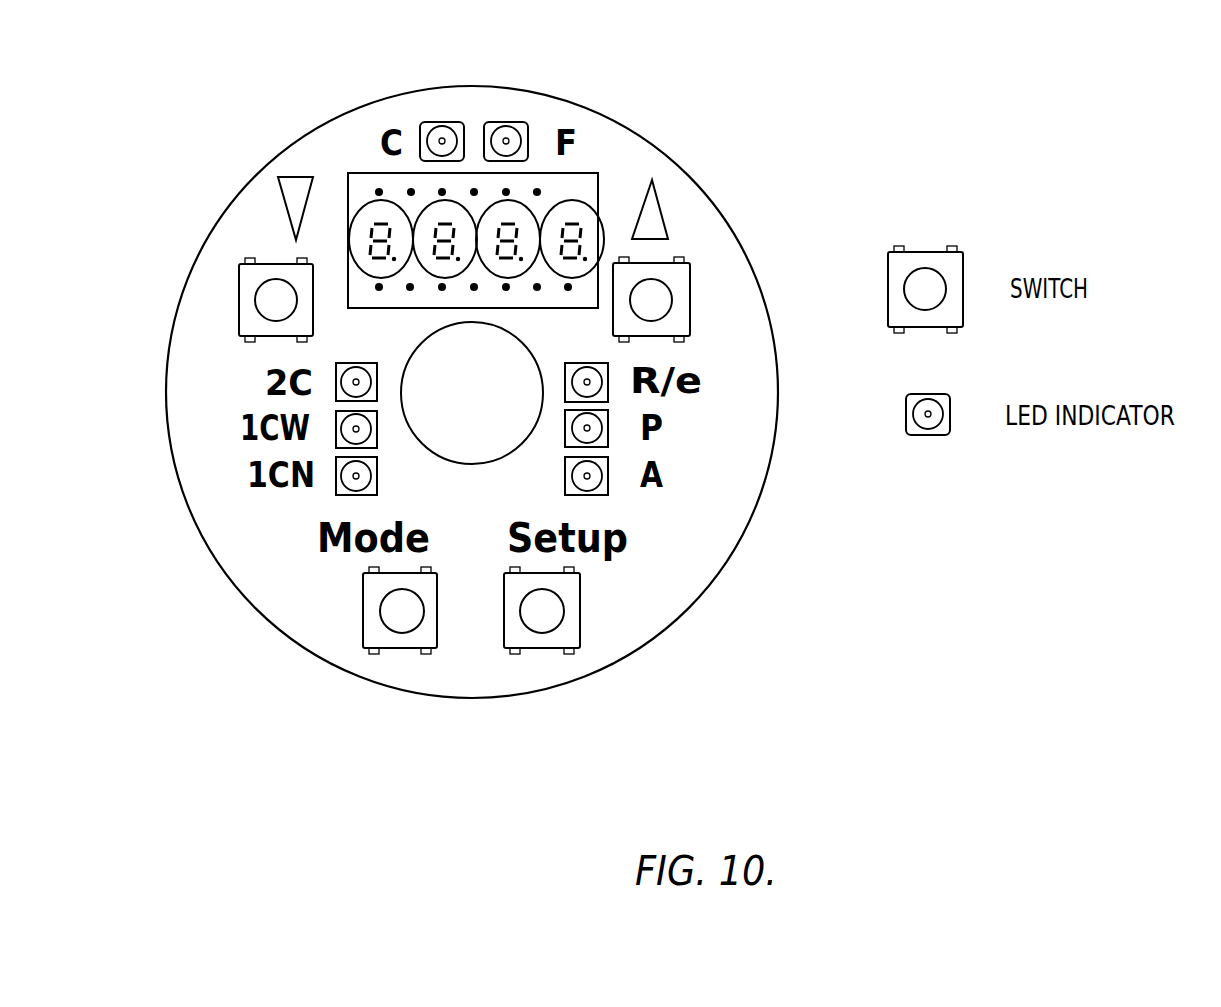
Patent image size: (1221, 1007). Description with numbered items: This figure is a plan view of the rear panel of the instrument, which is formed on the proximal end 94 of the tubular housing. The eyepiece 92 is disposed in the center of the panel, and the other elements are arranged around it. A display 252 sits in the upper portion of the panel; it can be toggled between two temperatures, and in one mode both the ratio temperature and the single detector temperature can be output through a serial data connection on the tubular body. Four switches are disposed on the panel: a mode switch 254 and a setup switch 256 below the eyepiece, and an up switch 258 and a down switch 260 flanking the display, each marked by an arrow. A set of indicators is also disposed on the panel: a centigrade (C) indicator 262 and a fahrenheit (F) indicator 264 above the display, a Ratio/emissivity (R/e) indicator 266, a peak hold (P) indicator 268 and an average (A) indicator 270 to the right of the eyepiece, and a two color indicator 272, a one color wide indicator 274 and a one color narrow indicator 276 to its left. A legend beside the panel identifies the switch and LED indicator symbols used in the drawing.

The proximal end 94 is at (663, 155).
The display 252 is at (580, 173).
The eyepiece 92 is at (483, 391).
The mode switch 254 is at (363, 605).
The setup switch 256 is at (580, 605).
The up switch 258 is at (690, 308).
The down switch 260 is at (239, 300).
The centigrade (C) indicator 262 is at (441, 122).
The fahrenheit (F) indicator 264 is at (512, 122).
The Ratio/emissivity (R/e) indicator 266 is at (568, 363).
The peak hold (P) indicator 268 is at (565, 428).
The average (A) indicator 270 is at (565, 481).
The two color (2C) indicator 272 is at (356, 363).
The one color wide (1CW) indicator 274 is at (377, 429).
The one color narrow (1CN) indicator 276 is at (377, 480).